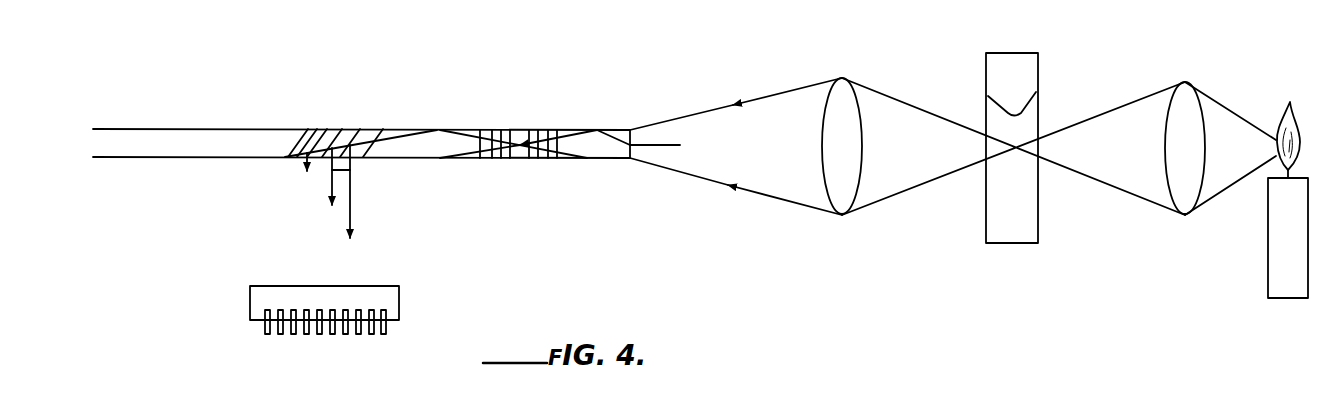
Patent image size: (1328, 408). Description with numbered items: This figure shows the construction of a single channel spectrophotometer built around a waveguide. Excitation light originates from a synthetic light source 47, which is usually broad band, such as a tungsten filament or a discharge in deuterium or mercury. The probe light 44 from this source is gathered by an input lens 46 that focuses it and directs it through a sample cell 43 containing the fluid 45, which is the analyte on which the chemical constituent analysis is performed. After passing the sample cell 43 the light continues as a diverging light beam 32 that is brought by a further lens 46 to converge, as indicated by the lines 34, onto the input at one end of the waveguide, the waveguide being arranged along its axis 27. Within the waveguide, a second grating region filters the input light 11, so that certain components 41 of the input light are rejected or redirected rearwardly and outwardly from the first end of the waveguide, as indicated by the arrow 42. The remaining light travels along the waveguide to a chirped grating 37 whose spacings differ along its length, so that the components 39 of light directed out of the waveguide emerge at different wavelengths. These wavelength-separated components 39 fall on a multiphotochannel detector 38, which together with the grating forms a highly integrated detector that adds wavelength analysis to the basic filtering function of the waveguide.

The input light 11 is at (466, 128).
The chirped grating 37 is at (373, 120).
The components of light 39 is at (305, 163).
The components of the input light 41 is at (556, 129).
The arrow 42 is at (598, 126).
The axis of the waveguide 27 is at (666, 148).
The converging lines 34 is at (693, 115).
The input lens 46 is at (859, 70).
The diverging light beam 32 is at (965, 127).
The sample cell 43 is at (1040, 75).
The fluid 45 is at (1031, 173).
The probe light 44 is at (1072, 125).
The light source 47 is at (1268, 272).
The multiphotochannel detector 38 is at (248, 302).